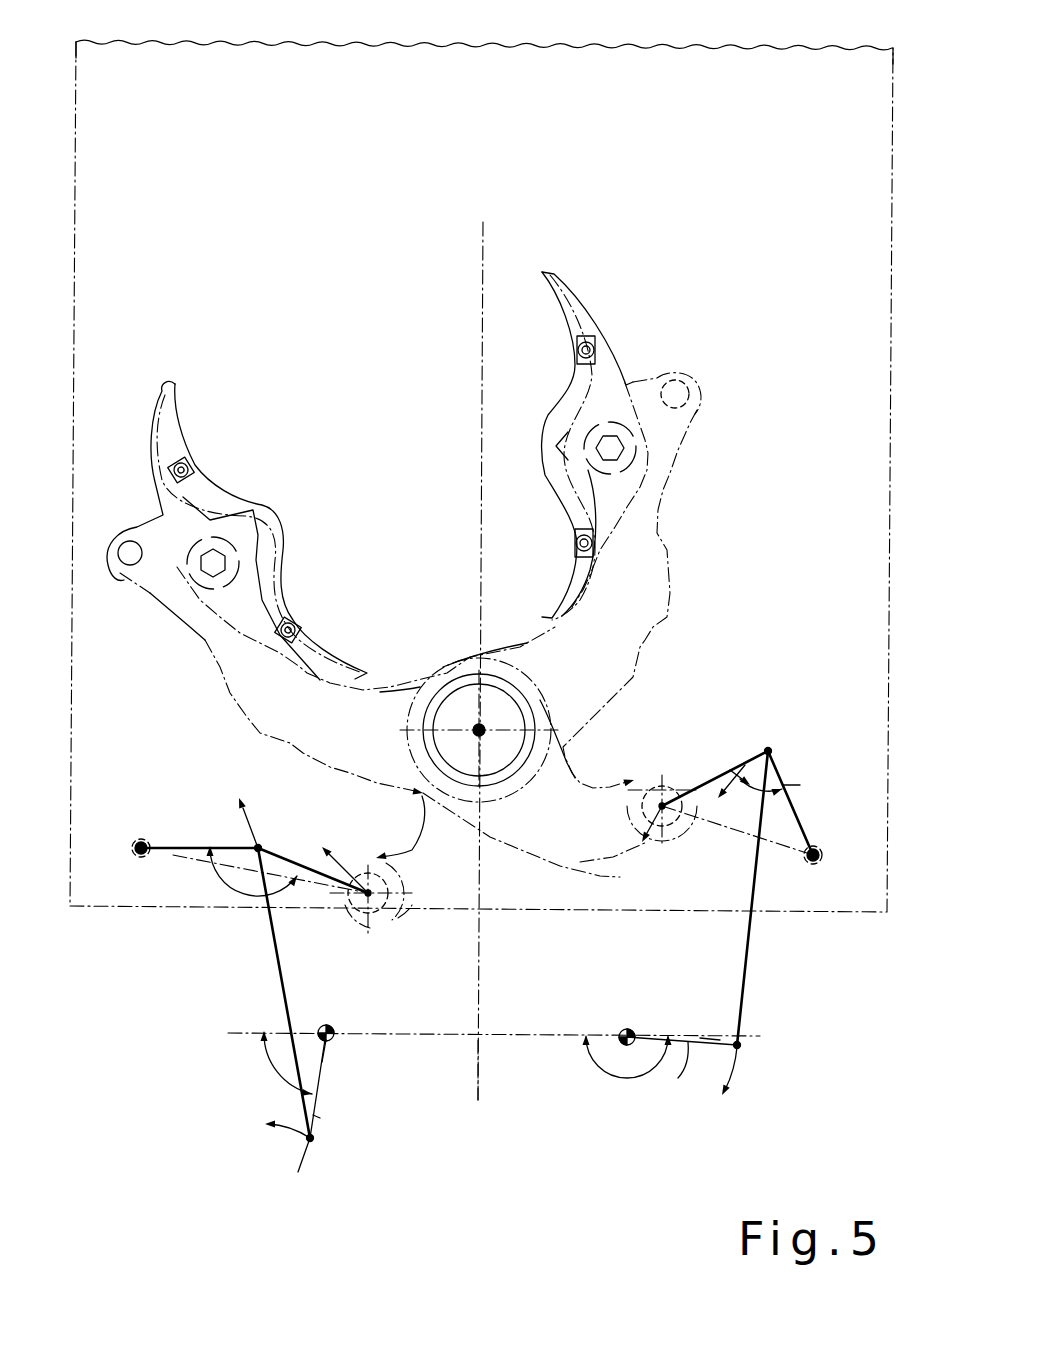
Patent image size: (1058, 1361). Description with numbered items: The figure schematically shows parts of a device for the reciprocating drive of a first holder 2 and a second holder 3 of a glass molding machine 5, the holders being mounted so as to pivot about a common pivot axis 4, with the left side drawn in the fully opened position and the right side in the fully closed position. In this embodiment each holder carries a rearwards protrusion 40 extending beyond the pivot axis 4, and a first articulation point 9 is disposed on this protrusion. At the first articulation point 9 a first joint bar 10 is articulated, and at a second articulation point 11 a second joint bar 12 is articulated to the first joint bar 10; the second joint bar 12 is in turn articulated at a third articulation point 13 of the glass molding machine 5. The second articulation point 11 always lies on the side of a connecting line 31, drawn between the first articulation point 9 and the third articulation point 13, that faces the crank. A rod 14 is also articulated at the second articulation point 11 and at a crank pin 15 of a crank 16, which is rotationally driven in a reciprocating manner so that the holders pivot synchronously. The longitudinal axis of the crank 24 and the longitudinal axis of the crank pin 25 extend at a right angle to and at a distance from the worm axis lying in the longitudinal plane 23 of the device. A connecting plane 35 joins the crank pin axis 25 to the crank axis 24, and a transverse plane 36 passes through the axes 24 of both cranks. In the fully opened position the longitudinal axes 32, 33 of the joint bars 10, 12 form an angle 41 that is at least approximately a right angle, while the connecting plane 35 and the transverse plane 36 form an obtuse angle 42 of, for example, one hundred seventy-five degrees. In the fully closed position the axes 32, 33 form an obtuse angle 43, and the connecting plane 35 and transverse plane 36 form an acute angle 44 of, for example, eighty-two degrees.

The first holder 2 is at (186, 630).
The second holder 3 is at (670, 498).
The pivot axis 4 is at (484, 724).
The glass molding machine 5 is at (652, 40).
The first articulation point 9 is at (353, 917).
The first joint bar 10 is at (283, 848).
The second articulation point 11 is at (258, 845).
The second joint bar 12 is at (176, 847).
The third articulation point 13 is at (140, 840).
The rod 14 is at (280, 973).
The crank pin 15 is at (310, 1142).
The crank 16 is at (325, 1057).
The longitudinal plane 23 is at (480, 258).
The longitudinal axis of the crank 24 is at (628, 1010).
The longitudinal axis of the crank pin 25 is at (293, 1170).
The connecting line 31 is at (142, 902).
The longitudinal axis of the first joint bar 32 is at (313, 857).
The longitudinal axis of the second joint bar 33 is at (217, 845).
The connecting plane 35 is at (313, 1115).
The transverse plane 36 is at (422, 1036).
The rearwards protrusion 40 is at (410, 920).
The angle 41 is at (743, 790).
The obtuse angle 42 is at (613, 1077).
The obtuse angle 43 is at (235, 895).
The acute angle 44 is at (272, 1067).